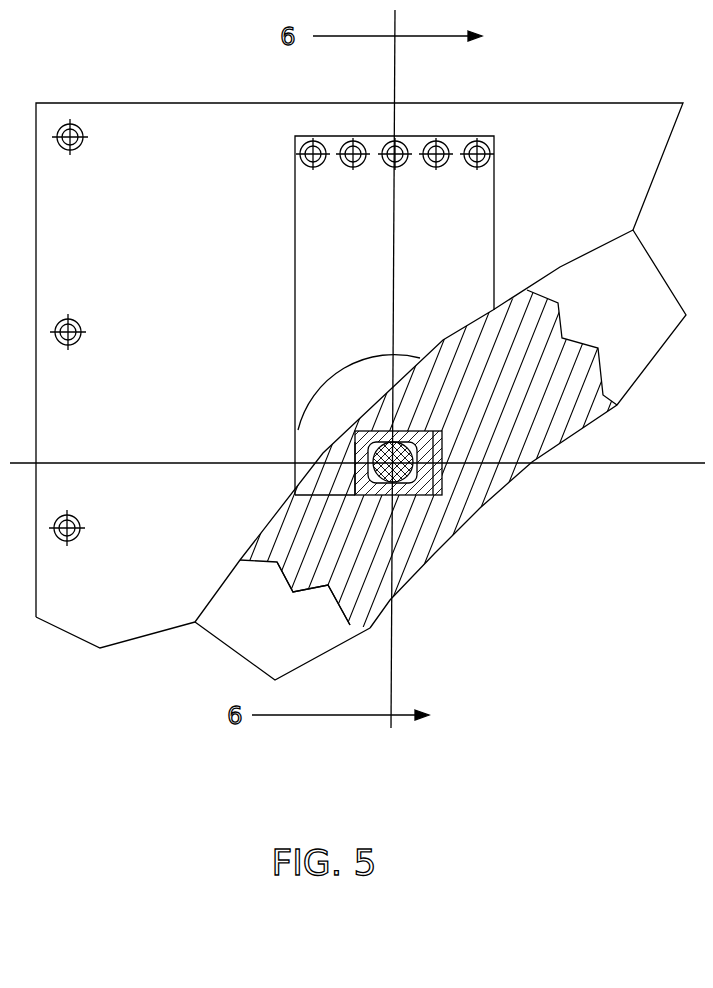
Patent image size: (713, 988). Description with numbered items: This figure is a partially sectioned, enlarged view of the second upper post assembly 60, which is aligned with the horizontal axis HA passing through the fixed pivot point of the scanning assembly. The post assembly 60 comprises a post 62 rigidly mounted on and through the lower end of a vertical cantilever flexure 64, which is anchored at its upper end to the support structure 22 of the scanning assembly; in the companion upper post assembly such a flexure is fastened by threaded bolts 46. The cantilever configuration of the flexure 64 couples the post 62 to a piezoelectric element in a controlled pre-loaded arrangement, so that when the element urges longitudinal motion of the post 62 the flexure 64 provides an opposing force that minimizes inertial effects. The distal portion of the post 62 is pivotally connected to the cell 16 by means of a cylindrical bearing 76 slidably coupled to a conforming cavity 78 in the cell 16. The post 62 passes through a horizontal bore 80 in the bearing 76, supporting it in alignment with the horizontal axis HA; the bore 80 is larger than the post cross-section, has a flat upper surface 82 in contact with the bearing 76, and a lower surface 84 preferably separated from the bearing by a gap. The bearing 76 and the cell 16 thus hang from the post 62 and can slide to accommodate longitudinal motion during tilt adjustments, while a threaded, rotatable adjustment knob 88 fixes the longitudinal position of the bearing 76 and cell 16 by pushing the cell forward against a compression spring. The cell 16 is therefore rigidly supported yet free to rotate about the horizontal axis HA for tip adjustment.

The cell 16 is at (630, 362).
The support structure 22 is at (138, 146).
The threaded bolts 46 is at (322, 141).
The post assembly 60 is at (275, 353).
The post 62 is at (355, 487).
The cantilever flexure 64 is at (325, 268).
The cylindrical bearing 76 is at (354, 442).
The conforming cavity 78 is at (347, 453).
The horizontal bore 80 is at (422, 494).
The flat upper surface 82 is at (375, 425).
The lower surface 84 is at (362, 496).
The adjustment knob 88 is at (330, 386).
The horizontal axis HA is at (632, 474).